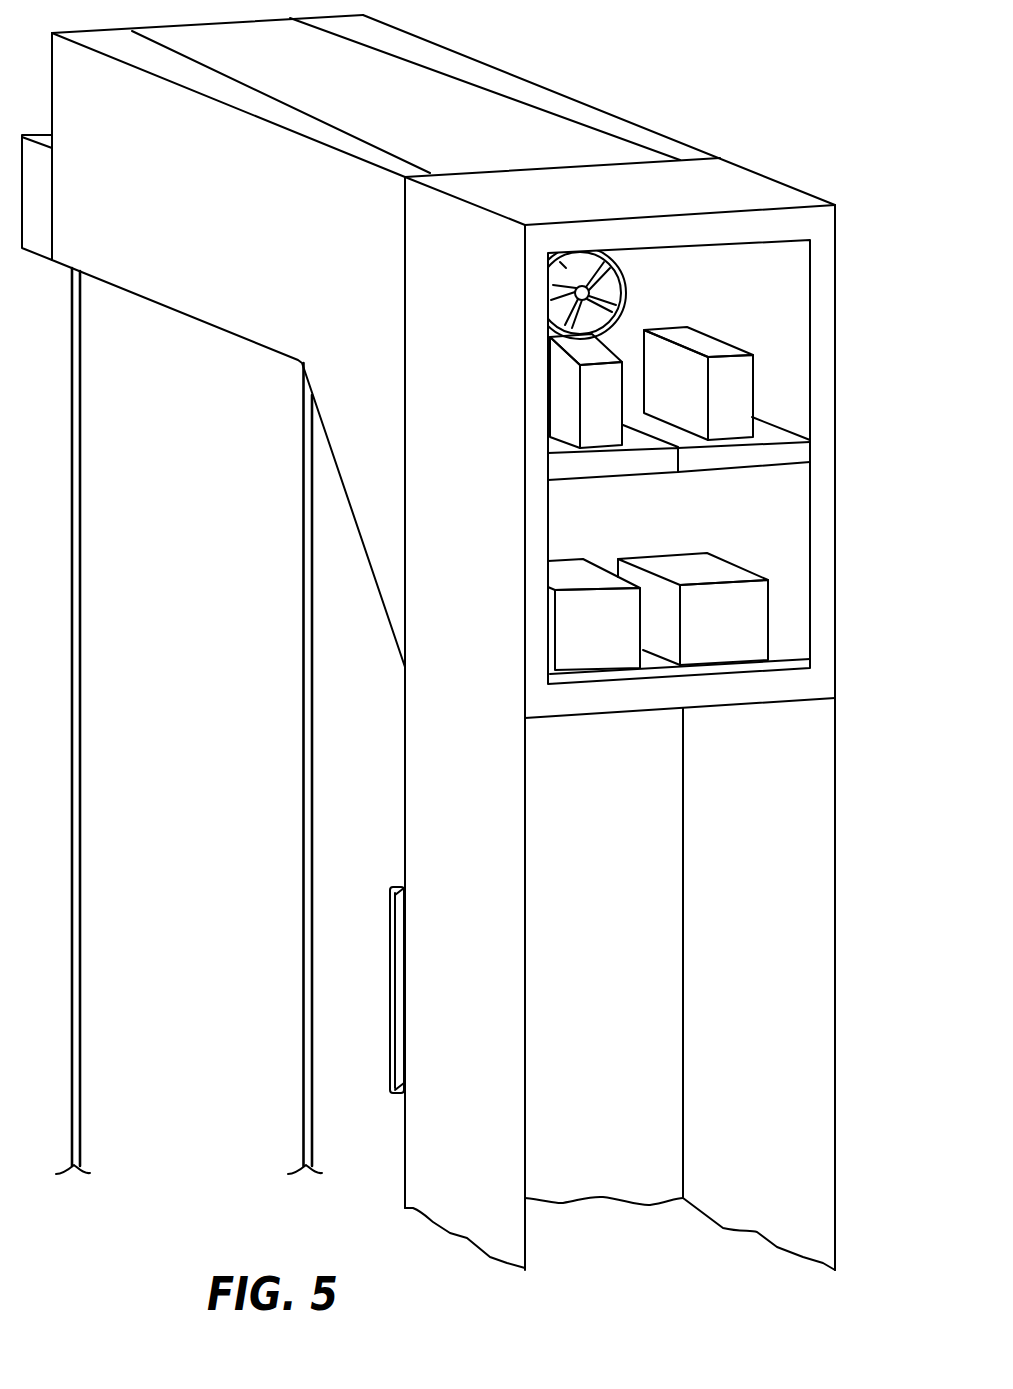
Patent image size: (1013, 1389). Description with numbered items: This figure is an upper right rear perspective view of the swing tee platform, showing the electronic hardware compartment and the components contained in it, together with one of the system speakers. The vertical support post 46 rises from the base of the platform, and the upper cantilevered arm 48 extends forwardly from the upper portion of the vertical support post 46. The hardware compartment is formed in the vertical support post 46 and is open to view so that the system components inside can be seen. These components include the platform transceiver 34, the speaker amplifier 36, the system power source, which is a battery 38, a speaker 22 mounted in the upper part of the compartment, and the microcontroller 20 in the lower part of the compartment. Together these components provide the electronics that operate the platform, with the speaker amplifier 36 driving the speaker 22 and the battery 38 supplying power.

The microcontroller 20 is at (582, 647).
The speaker 22 is at (625, 285).
The platform transceiver 34 is at (740, 425).
The speaker amplifier 36 is at (600, 425).
The system power source (battery) 38 is at (738, 603).
The vertical support post 46 is at (787, 1222).
The upper cantilevered arm 48 is at (88, 248).